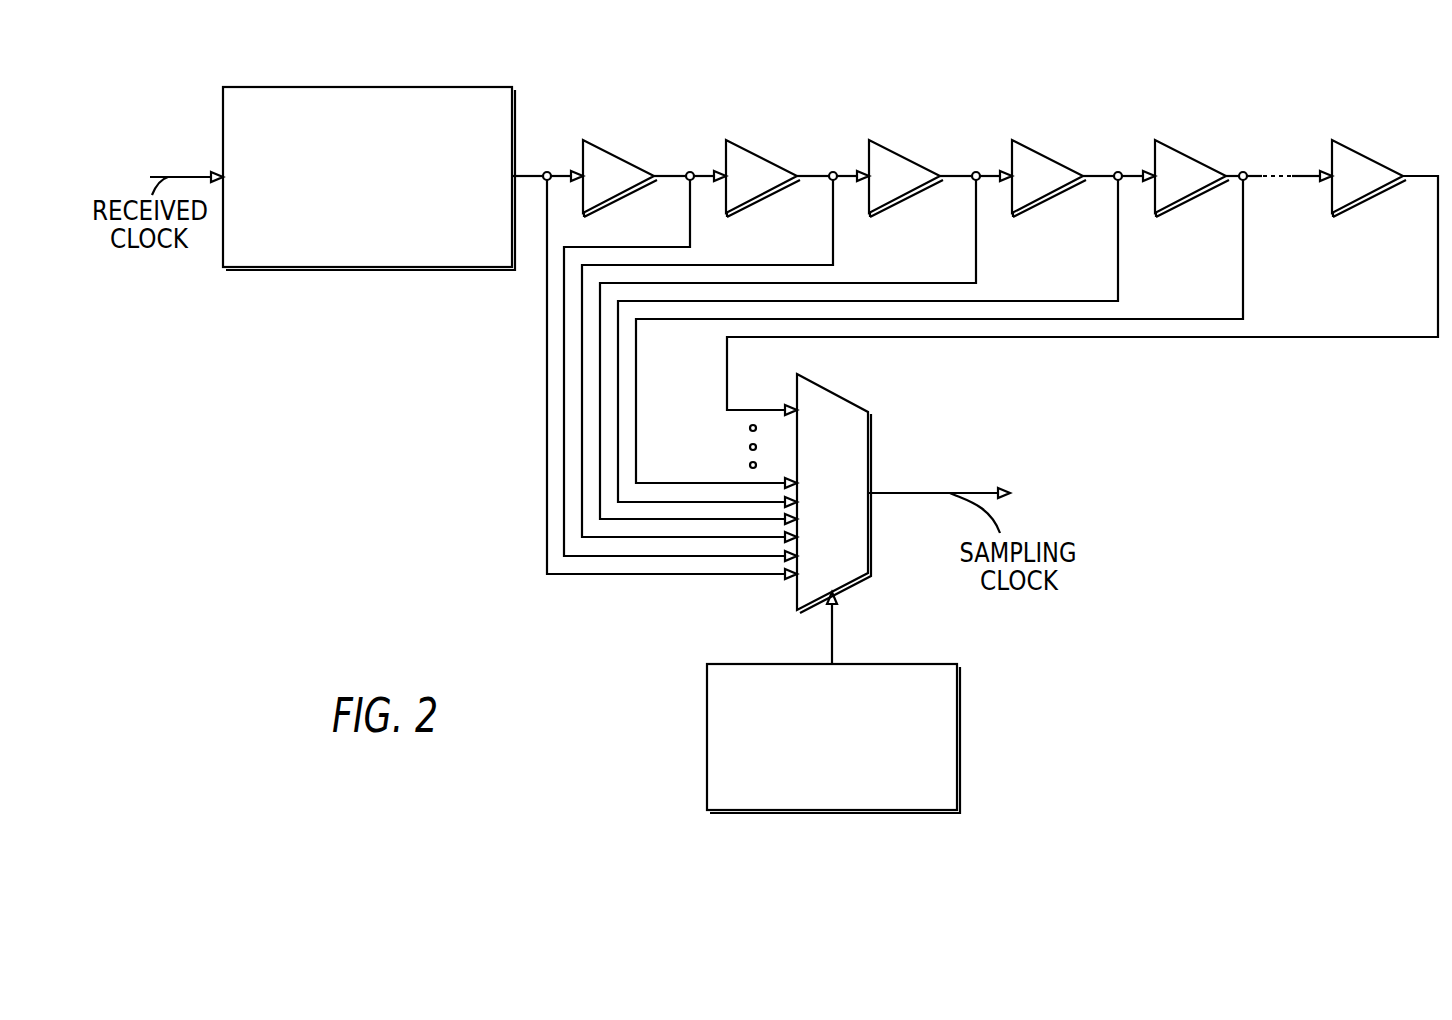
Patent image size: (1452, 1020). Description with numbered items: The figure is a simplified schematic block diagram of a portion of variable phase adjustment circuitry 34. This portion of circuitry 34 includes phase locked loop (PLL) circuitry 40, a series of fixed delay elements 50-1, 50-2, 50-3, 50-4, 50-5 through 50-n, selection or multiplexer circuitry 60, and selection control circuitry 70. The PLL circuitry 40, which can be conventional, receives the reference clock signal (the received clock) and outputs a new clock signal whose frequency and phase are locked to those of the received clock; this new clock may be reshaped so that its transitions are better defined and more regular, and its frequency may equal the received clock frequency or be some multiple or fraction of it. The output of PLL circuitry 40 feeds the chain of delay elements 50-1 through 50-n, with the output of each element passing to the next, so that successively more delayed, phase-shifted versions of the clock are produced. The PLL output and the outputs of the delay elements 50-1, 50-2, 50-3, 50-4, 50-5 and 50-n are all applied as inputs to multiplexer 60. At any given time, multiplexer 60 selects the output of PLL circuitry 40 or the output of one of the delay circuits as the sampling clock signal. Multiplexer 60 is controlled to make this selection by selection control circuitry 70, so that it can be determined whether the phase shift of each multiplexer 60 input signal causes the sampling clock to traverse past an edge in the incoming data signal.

The variable phase adjustment circuitry 34 is at (932, 62).
The phase locked loop circuitry 40 is at (380, 87).
The fixed delay element 50-1 is at (605, 145).
The fixed delay element 50-2 is at (748, 145).
The fixed delay element 50-3 is at (891, 145).
The fixed delay element 50-4 is at (1034, 145).
The fixed delay element 50-5 is at (1177, 145).
The fixed delay element 50-n is at (1354, 145).
The multiplexer circuitry 60 is at (835, 390).
The selection control circuitry 70 is at (957, 715).